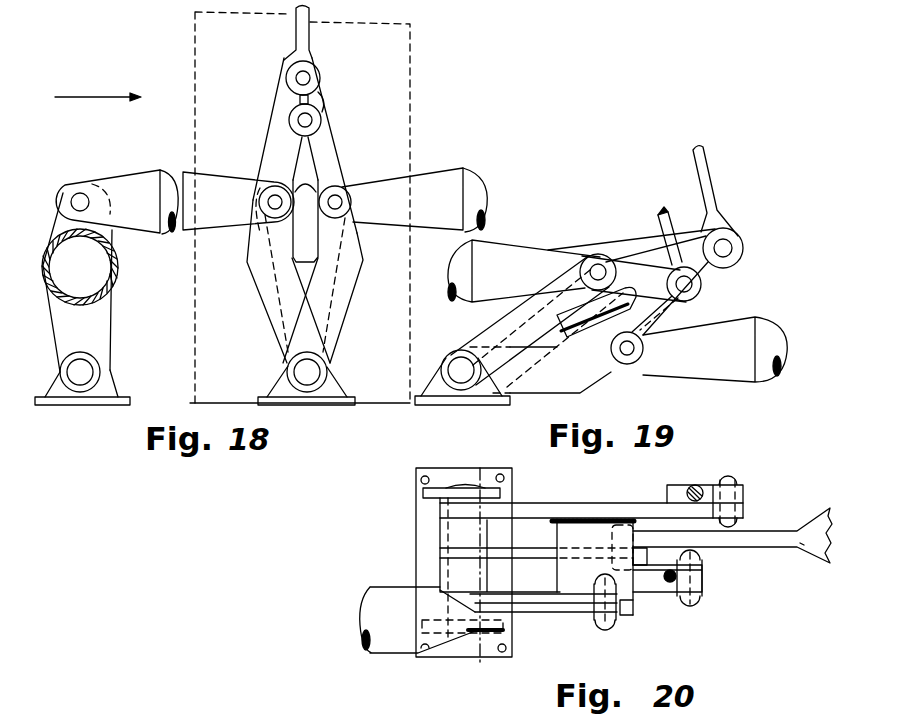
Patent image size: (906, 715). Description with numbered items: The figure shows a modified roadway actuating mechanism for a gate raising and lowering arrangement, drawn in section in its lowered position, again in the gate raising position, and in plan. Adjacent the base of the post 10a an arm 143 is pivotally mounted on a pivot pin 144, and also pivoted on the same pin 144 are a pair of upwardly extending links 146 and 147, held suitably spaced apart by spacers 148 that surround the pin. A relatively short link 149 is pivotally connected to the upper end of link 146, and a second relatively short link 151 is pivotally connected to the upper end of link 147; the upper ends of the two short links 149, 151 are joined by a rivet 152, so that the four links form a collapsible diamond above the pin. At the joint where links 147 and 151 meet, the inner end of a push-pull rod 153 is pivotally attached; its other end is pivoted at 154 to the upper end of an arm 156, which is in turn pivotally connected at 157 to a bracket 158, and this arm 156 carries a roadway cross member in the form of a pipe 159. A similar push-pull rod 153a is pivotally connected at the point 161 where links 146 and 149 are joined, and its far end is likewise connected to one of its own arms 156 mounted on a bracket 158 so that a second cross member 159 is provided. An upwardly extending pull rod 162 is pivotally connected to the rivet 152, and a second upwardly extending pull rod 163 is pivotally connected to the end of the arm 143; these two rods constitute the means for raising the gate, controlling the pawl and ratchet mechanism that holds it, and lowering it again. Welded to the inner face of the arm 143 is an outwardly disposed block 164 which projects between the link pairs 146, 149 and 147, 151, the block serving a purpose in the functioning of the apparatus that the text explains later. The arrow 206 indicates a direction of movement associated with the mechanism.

In FIG. 18, the direction arrow 206 is at (92, 98).
In FIG. 18, the post 10a is at (412, 160).
In FIG. 18, the arm 143 is at (322, 103).
In FIG. 19, the arm 143 is at (648, 247).
In FIG. 20, the arm 143 is at (617, 512).
In FIG. 18, the pivot pin 144 is at (309, 374).
In FIG. 19, the pivot pin 144 is at (455, 370).
In FIG. 20, the pivot pin 144 is at (472, 487).
In FIG. 18, the link 146 is at (347, 298).
In FIG. 19, the link 146 is at (596, 376).
In FIG. 20, the link 146 is at (447, 553).
In FIG. 18, the link 147 is at (258, 268).
In FIG. 19, the link 147 is at (488, 318).
In FIG. 20, the link 147 is at (533, 604).
In FIG. 20, the spacers 148 is at (458, 532).
In FIG. 18, the relatively short link 149 is at (326, 160).
In FIG. 19, the relatively short link 149 is at (660, 336).
In FIG. 20, the relatively short link 149 is at (660, 580).
In FIG. 18, the second relatively short link 151 is at (280, 160).
In FIG. 19, the second relatively short link 151 is at (635, 267).
In FIG. 20, the second relatively short link 151 is at (660, 593).
In FIG. 18, the rivet 152 is at (298, 118).
In FIG. 19, the rivet 152 is at (703, 286).
In FIG. 20, the rivet 152 is at (690, 552).
In FIG. 18, the push-pull rod 153 is at (216, 188).
In FIG. 20, the push-pull rod 153 is at (395, 642).
In FIG. 19, the push-pull rod 153a is at (773, 331).
In FIG. 20, the push-pull rod 153a is at (807, 520).
In FIG. 18, the pivotal connection 154 is at (79, 193).
In FIG. 18, the arm 156 is at (116, 321).
In FIG. 18, the pivotal connection 157 is at (84, 376).
In FIG. 18, the bracket 158 is at (107, 388).
In FIG. 18, the pipe 159 is at (118, 297).
In FIG. 18, the pivotal connection point 161 is at (341, 201).
In FIG. 19, the pivotal connection point 161 is at (630, 363).
In FIG. 20, the pivotal connection point 161 is at (637, 527).
In FIG. 18, the pull rod 162 is at (318, 92).
In FIG. 19, the pull rod 162 is at (667, 213).
In FIG. 20, the pull rod 162 is at (678, 598).
In FIG. 18, the second pull rod 163 is at (308, 24).
In FIG. 19, the second pull rod 163 is at (718, 201).
In FIG. 20, the second pull rod 163 is at (705, 485).
In FIG. 18, the block 164 is at (312, 235).
In FIG. 19, the block 164 is at (606, 312).
In FIG. 20, the block 164 is at (567, 530).